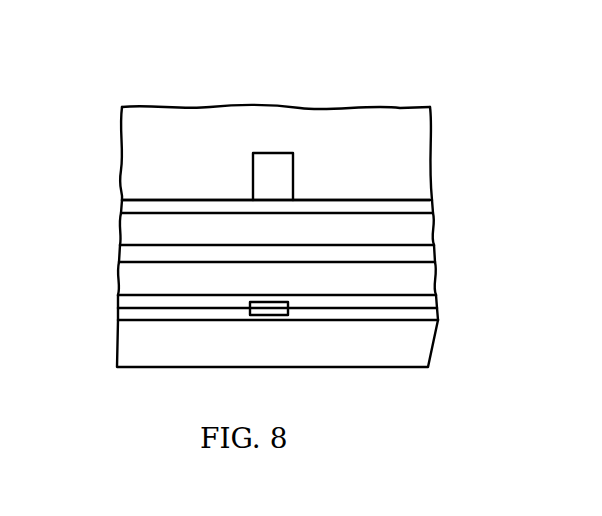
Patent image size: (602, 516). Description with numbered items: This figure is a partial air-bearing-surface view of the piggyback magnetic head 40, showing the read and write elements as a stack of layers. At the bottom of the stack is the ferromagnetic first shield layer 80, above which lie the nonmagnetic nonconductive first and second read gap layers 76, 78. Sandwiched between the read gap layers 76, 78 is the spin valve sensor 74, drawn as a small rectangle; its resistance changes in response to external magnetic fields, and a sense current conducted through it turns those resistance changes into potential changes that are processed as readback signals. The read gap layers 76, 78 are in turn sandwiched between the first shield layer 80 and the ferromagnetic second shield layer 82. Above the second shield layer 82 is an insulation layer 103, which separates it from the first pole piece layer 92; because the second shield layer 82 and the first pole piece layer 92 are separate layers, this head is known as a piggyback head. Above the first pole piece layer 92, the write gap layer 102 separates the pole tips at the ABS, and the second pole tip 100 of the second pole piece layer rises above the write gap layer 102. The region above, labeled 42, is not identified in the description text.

The piggyback magnetic head 40 is at (312, 236).
The substrate / upper body 42 is at (130, 133).
The second pole tip 100 is at (284, 160).
The write gap layer 102 is at (203, 207).
The first pole piece layer 92 is at (128, 228).
The insulation layer 103 is at (403, 254).
The second shield layer 82 is at (128, 277).
The second read gap layer 78 is at (393, 302).
The spin valve sensor 74 is at (273, 315).
The first read gap layer 76 is at (152, 320).
The first shield layer 80 is at (412, 344).